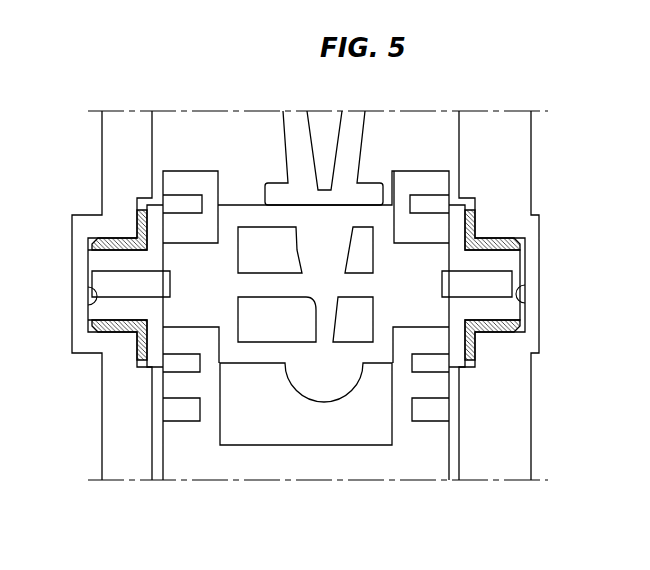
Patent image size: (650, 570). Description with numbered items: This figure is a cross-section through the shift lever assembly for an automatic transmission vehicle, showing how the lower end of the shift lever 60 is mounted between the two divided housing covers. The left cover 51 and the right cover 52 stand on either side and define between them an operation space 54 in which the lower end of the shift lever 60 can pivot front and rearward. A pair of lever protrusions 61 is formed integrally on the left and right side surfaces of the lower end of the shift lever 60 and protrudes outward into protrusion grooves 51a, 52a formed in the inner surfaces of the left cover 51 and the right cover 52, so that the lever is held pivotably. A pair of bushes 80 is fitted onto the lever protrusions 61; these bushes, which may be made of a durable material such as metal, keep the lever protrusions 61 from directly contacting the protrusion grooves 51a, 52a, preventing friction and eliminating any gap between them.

The left cover 51 is at (128, 125).
The protrusion groove 51a is at (88, 300).
The right cover 52 is at (492, 125).
The protrusion groove 52a is at (525, 297).
The operation space 54 is at (245, 157).
The shift lever 60 is at (250, 358).
The lever protrusions 61 is at (108, 259).
The bushes 80 is at (112, 238).